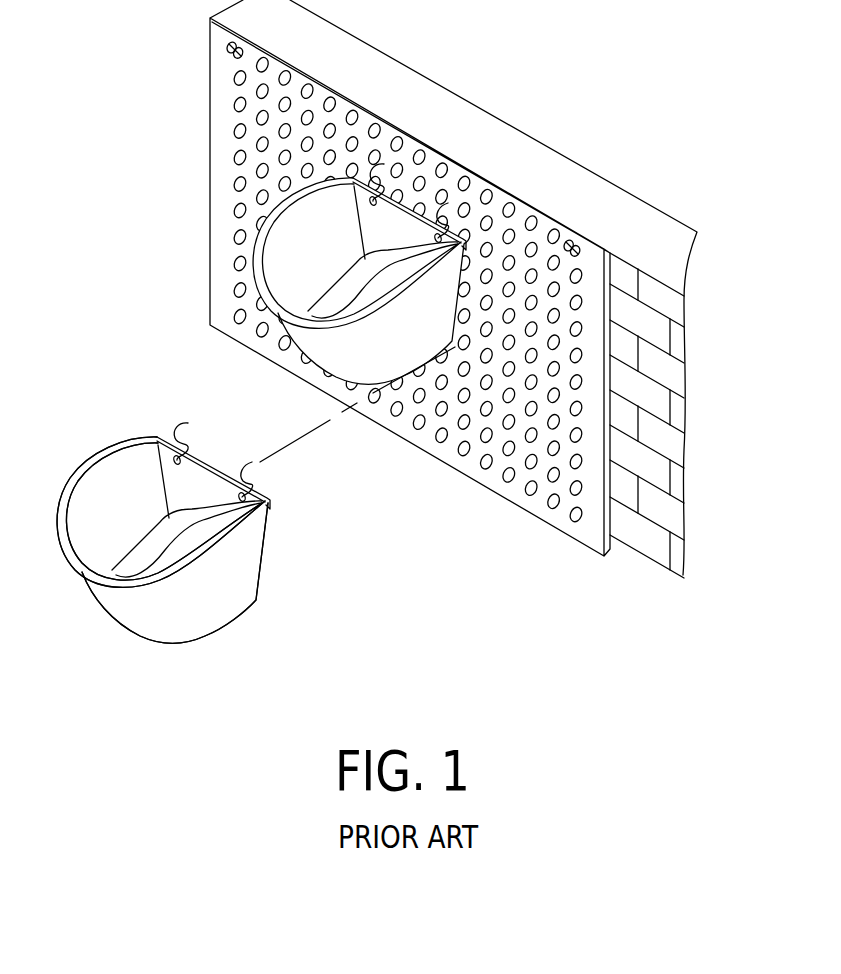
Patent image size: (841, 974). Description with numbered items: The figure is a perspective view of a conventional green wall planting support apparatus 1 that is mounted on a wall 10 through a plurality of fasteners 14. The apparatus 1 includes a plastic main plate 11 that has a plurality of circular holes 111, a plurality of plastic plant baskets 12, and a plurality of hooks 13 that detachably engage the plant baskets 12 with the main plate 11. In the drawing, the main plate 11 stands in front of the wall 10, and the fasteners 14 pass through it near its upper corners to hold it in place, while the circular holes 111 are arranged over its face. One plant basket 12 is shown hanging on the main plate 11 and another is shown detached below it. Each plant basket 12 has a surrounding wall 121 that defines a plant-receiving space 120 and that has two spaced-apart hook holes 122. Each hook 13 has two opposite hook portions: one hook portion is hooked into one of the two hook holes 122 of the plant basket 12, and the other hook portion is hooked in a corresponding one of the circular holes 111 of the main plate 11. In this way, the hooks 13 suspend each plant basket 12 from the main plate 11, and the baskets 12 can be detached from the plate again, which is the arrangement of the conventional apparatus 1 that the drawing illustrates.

The conventional green wall planting support apparatus 1 is at (490, 523).
The wall 10 is at (632, 224).
The main plate 11 is at (588, 533).
The circular holes 111 is at (463, 449).
The plant basket 12 is at (199, 636).
The plant-receiving space 120 is at (113, 493).
The surrounding wall 121 is at (258, 567).
The hook holes 122 is at (173, 458).
The hooks 13 is at (252, 462).
The fasteners 14 is at (229, 51).